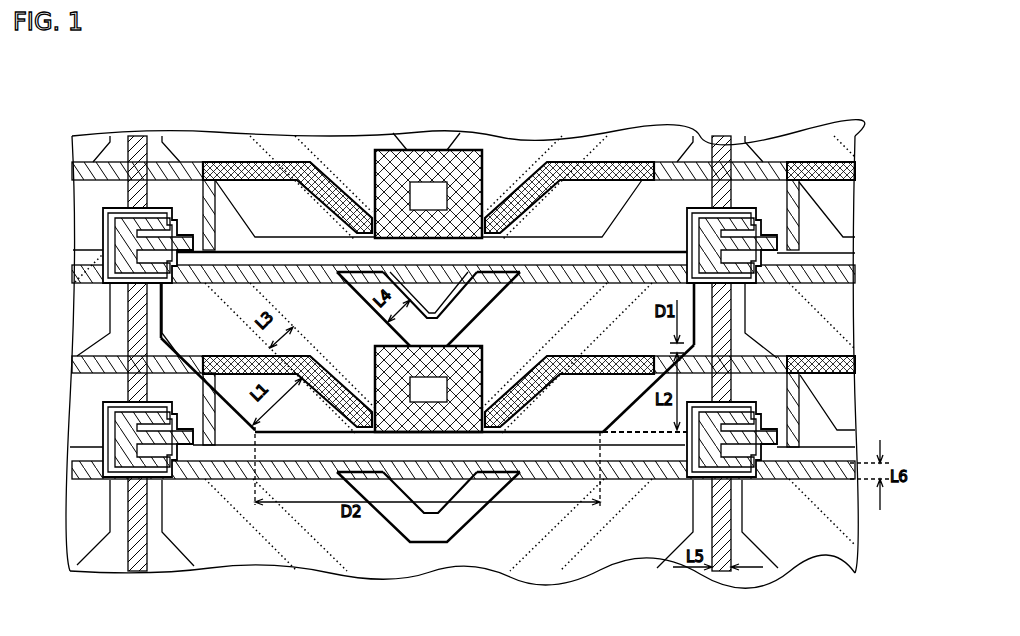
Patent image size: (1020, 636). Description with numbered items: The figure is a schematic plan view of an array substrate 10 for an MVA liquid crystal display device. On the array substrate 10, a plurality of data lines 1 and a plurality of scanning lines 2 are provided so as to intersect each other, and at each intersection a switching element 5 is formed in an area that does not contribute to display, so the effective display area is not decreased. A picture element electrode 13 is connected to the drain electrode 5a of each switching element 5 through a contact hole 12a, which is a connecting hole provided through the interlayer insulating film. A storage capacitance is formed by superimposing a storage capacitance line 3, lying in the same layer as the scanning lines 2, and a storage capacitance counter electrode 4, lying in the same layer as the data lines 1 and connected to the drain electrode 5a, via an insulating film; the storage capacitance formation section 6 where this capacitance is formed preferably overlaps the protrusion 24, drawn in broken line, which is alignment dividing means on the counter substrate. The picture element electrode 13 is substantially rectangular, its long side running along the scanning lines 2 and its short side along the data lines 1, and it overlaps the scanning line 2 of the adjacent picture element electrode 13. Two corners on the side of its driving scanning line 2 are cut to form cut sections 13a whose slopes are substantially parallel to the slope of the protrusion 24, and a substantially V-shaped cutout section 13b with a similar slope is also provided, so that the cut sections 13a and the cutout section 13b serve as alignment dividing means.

The data line 1 is at (137, 573).
The scanning line 2 is at (288, 278).
The storage capacitance line 3 is at (100, 364).
The storage capacitance counter electrode 4 is at (130, 345).
The switching element 5 is at (96, 226).
The drain electrode 5a is at (219, 447).
The storage capacitance formation section 6 is at (427, 436).
The array substrate 10 is at (794, 93).
The contact hole 12a is at (483, 356).
The picture element electrode 13 is at (632, 250).
The cut section 13a is at (252, 430).
The cutout section 13b is at (459, 298).
The protrusion 24 is at (598, 296).